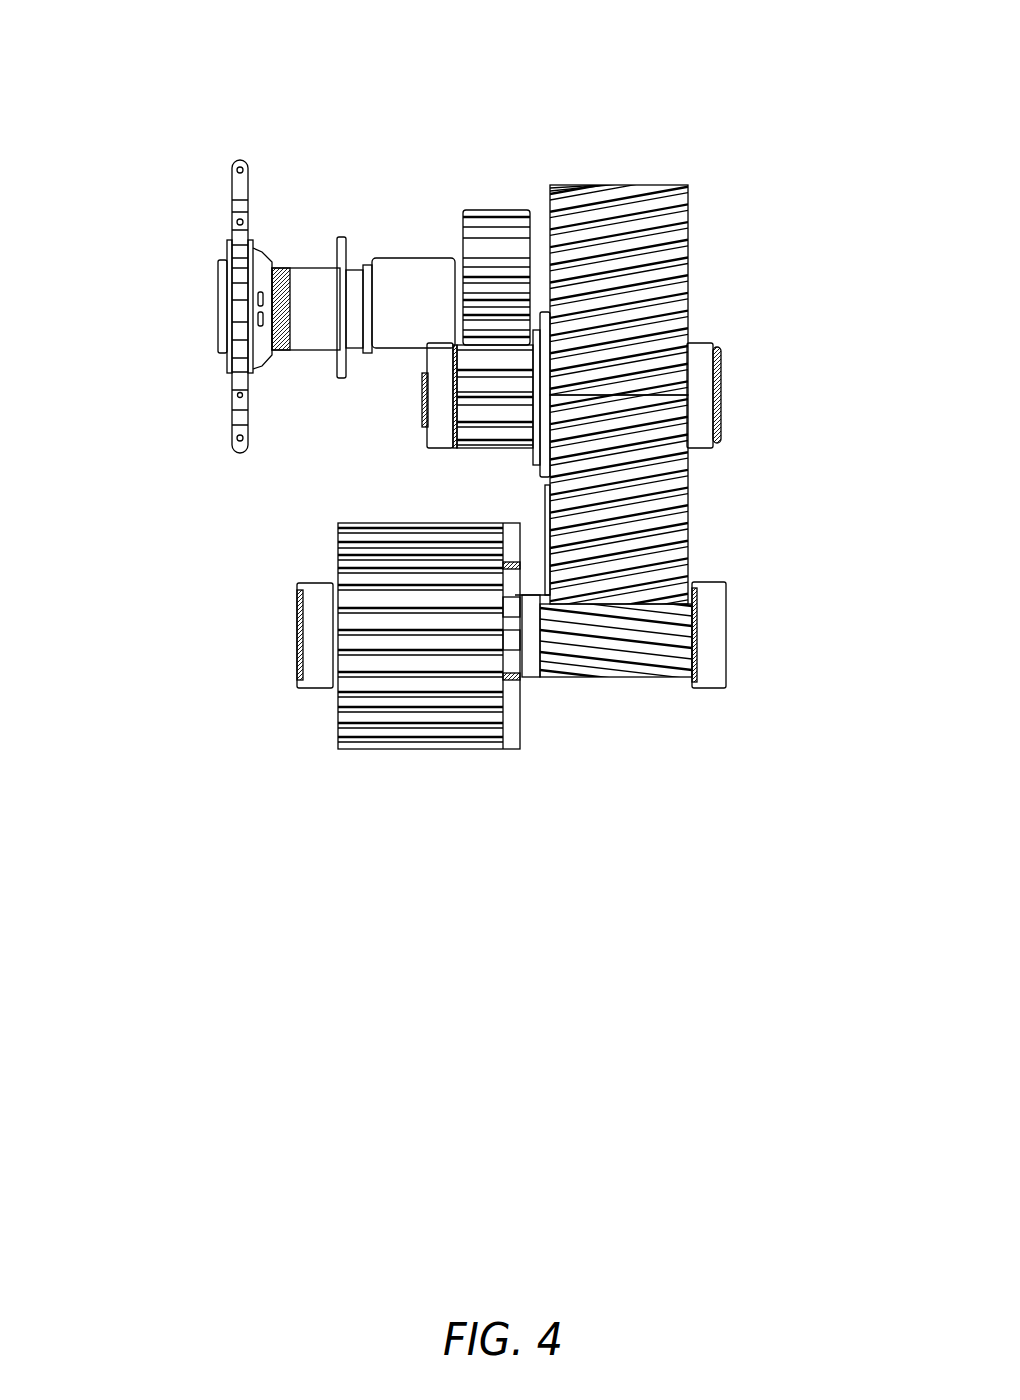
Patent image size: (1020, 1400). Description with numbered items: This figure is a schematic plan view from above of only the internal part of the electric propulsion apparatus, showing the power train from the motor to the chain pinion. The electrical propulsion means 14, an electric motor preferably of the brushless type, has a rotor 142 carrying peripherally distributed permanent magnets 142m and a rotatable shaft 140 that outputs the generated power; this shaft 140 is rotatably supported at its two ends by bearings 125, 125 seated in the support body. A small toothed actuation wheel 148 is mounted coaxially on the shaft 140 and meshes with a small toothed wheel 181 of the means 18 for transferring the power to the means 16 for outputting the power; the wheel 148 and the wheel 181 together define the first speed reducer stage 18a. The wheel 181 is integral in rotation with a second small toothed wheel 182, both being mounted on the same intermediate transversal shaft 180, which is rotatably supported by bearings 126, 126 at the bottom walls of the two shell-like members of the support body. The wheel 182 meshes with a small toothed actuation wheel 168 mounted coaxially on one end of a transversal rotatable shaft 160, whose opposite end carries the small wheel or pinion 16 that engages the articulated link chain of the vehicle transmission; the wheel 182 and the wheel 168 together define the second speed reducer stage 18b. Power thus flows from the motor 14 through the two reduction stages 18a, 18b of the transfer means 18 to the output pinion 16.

The electrical propulsion means 14 is at (495, 735).
The means for outputting the power 16 is at (238, 163).
The means for transferring the power 18 is at (468, 312).
The first speed reducer stage 18a is at (717, 496).
The second speed reducer stage 18b is at (507, 197).
The bearings 125 is at (322, 685).
The bearings 126 is at (706, 340).
The rotatable shaft 140 is at (495, 730).
The rotor 142 is at (470, 733).
The permanent magnets 142m is at (518, 677).
The small actuation wheel 148 is at (600, 672).
The transversal rotatable shaft 160 is at (308, 270).
The small actuation wheel 168 is at (327, 287).
The intermediate transversal shaft 180 is at (738, 398).
The small wheel 181 is at (637, 168).
The small wheel 182 is at (495, 447).